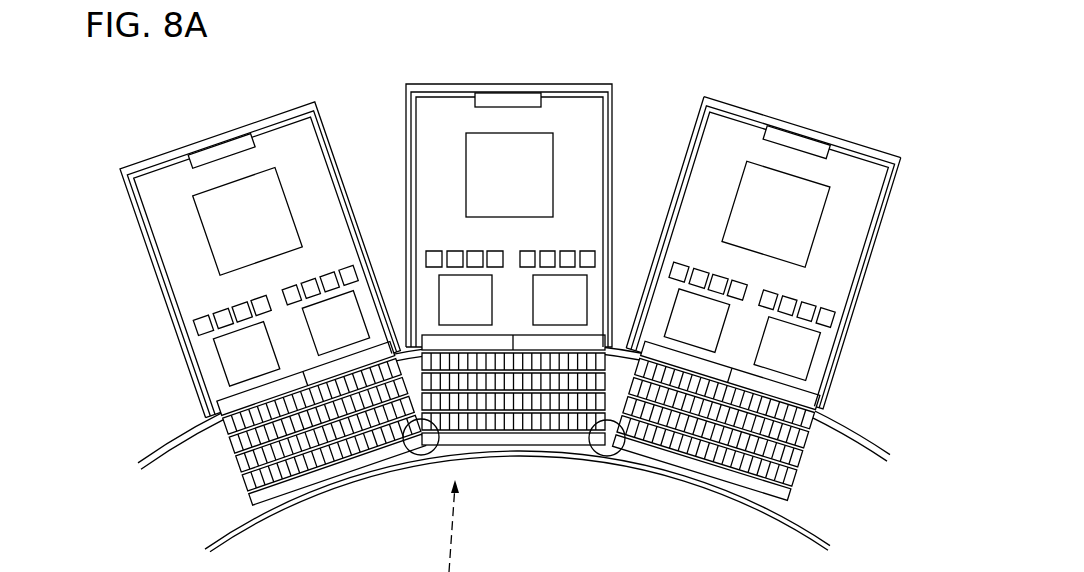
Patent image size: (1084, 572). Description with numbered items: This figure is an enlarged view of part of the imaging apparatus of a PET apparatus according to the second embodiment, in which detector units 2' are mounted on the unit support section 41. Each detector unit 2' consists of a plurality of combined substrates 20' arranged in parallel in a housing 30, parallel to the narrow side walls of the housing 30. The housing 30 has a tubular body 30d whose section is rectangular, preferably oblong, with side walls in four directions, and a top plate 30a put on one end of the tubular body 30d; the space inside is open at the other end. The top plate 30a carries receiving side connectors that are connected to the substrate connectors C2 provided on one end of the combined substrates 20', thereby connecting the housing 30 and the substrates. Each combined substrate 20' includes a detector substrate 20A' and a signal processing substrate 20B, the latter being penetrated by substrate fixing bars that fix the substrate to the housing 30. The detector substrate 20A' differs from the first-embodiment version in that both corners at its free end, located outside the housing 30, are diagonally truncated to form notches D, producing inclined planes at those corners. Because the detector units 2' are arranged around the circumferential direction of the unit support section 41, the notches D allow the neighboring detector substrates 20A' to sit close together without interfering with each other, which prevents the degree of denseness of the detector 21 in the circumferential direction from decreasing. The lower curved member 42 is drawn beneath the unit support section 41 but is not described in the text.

The detector unit 2' is at (494, 289).
The substrate connector C2 is at (208, 162).
The combined substrate 20' is at (250, 330).
The signal processing substrate 20B is at (197, 303).
The detector substrate 20A' is at (272, 450).
The detector 21 is at (303, 462).
The notch D is at (593, 457).
The housing 30 is at (773, 216).
The top plate 30a is at (853, 142).
The tubular body 30d is at (887, 202).
The unit support section 41 is at (872, 438).
The second curved guide member 42 is at (818, 530).